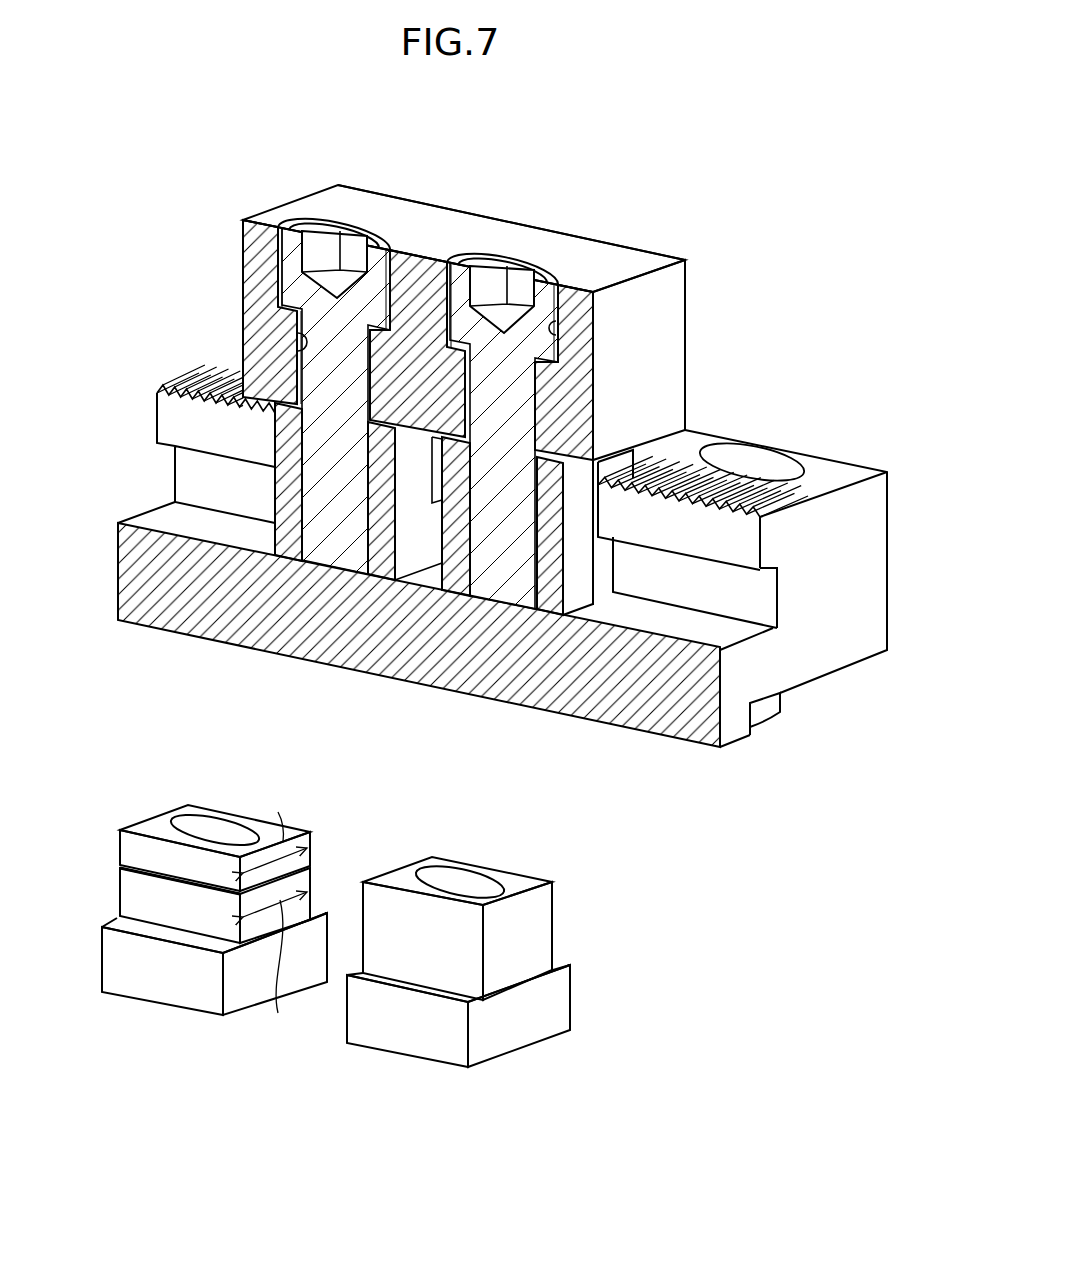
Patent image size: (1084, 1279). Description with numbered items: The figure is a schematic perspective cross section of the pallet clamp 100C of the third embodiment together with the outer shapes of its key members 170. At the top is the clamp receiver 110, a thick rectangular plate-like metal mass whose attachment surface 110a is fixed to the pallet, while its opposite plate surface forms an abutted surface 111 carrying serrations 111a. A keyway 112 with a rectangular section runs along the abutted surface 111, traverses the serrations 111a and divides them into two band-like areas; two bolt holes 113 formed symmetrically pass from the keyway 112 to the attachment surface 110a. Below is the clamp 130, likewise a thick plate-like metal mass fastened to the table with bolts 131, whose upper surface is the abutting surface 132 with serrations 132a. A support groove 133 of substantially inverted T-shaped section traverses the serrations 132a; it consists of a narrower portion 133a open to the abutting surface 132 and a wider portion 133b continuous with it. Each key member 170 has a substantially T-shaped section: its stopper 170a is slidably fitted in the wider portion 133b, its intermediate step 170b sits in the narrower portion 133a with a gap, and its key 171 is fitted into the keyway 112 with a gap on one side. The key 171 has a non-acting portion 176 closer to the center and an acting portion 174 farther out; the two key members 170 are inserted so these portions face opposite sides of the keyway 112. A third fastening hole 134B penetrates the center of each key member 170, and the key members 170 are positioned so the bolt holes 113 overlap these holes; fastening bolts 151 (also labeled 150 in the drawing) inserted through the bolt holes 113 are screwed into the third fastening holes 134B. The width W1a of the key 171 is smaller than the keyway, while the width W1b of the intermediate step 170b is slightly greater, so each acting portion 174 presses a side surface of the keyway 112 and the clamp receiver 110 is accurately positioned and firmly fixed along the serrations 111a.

The pallet clamp 100C is at (557, 127).
The clamp receiver 110 is at (436, 458).
The attachment surface 110a is at (643, 261).
The abutted surface 111 is at (700, 452).
The serrations 111a is at (597, 478).
The keyway 112 is at (620, 461).
The bolt holes 113 is at (296, 331).
The clamp 130 is at (539, 578).
The bolts 131 is at (766, 722).
The abutting surface 132 is at (742, 443).
The serrations 132a is at (733, 472).
The support groove 133 is at (779, 545).
The narrower portion 133a is at (748, 541).
The wider portion 133b is at (748, 590).
The third fastening hole 134B is at (180, 826).
The hole 150 is at (441, 214).
The fastening bolts 151 is at (316, 244).
The key member 170 is at (278, 500).
The stopper 170a is at (560, 1000).
The intermediate step 170b is at (545, 940).
The key 171 is at (540, 898).
The acting portion 174 is at (310, 873).
The non-acting portion 176 is at (137, 847).
The width of the key W1a is at (277, 830).
The width of the intermediate step W1b is at (280, 966).